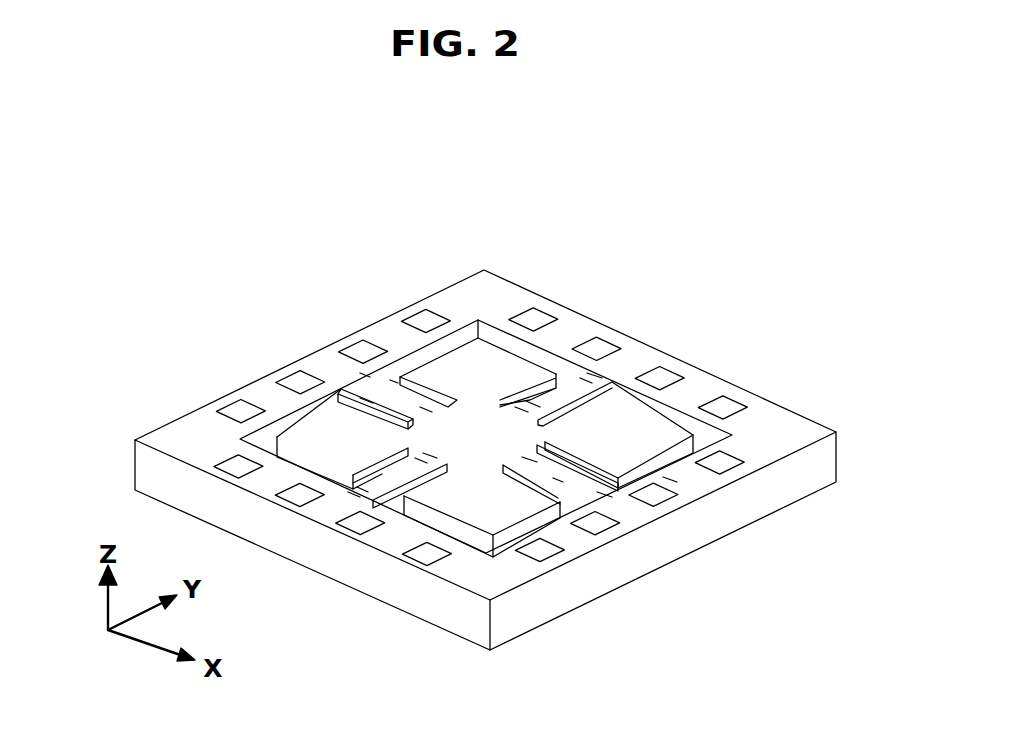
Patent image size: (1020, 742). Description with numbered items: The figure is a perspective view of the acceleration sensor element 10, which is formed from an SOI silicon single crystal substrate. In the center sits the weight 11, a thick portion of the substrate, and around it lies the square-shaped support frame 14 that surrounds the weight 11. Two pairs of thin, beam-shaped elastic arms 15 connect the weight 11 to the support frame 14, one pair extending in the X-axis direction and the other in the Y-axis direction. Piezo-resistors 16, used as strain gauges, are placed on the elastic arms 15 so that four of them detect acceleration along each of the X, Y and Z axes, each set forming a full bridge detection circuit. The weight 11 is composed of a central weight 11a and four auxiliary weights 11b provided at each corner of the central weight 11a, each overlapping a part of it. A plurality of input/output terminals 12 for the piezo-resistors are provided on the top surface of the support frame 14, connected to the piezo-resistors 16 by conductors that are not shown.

The acceleration sensor element 10 is at (228, 250).
The weight 11 is at (386, 529).
The central weight 11a is at (472, 433).
The auxiliary weight 11b is at (325, 437).
The input/output terminal 12 is at (730, 410).
The support frame 14 is at (733, 512).
The elastic arm 15 is at (557, 392).
The piezo-resistor 16 is at (602, 488).